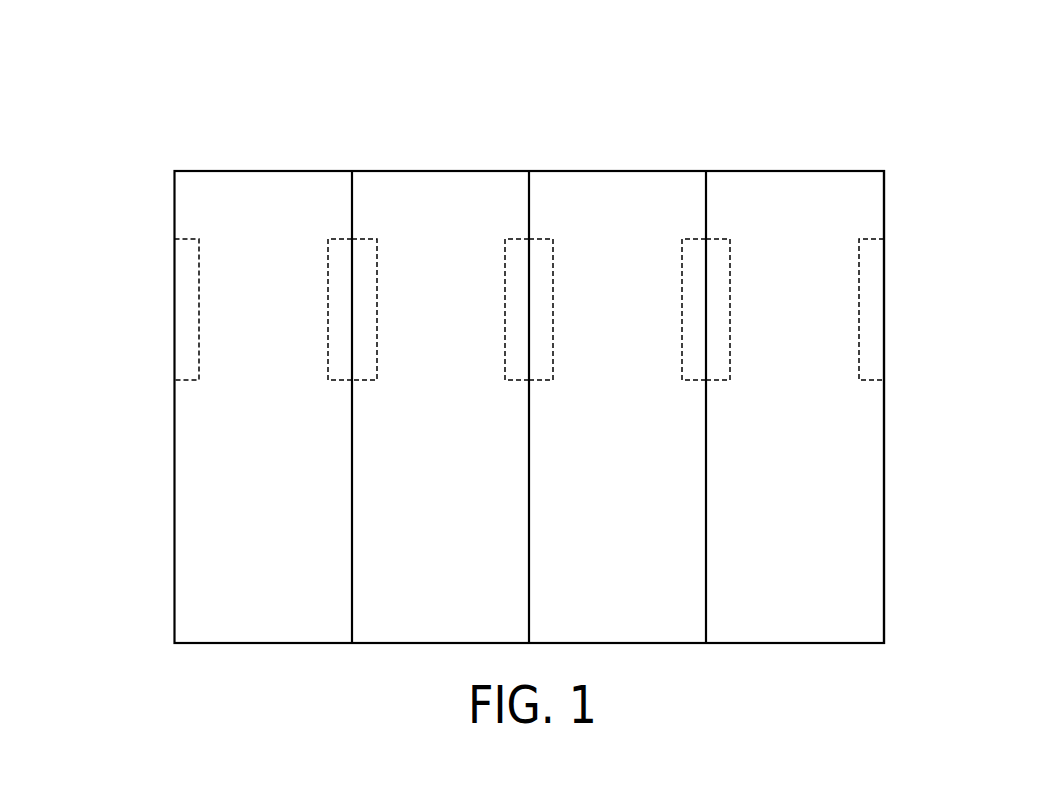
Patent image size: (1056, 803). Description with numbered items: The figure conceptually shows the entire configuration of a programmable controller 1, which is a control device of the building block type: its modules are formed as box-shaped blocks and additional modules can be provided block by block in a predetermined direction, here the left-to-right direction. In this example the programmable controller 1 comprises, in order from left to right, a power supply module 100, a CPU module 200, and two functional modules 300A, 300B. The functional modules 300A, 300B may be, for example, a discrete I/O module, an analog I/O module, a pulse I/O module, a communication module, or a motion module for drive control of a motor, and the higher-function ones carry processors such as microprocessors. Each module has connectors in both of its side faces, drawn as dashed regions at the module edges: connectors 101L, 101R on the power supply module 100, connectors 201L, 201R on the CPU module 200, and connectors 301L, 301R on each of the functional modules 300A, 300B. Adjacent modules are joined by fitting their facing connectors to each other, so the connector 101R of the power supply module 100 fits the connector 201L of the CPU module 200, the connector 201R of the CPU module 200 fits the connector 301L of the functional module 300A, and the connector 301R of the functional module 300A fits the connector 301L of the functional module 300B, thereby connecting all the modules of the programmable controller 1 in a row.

The programmable controller 1 is at (991, 111).
The power supply module 100 is at (266, 163).
The CPU module 200 is at (443, 163).
The functional module 300A is at (619, 163).
The functional module 300B is at (797, 163).
The connector 101L is at (185, 381).
The connector 101R is at (340, 381).
The connector 201L is at (364, 381).
The connector 201R is at (517, 381).
The connector 301L is at (541, 381).
The connector 301R is at (694, 381).